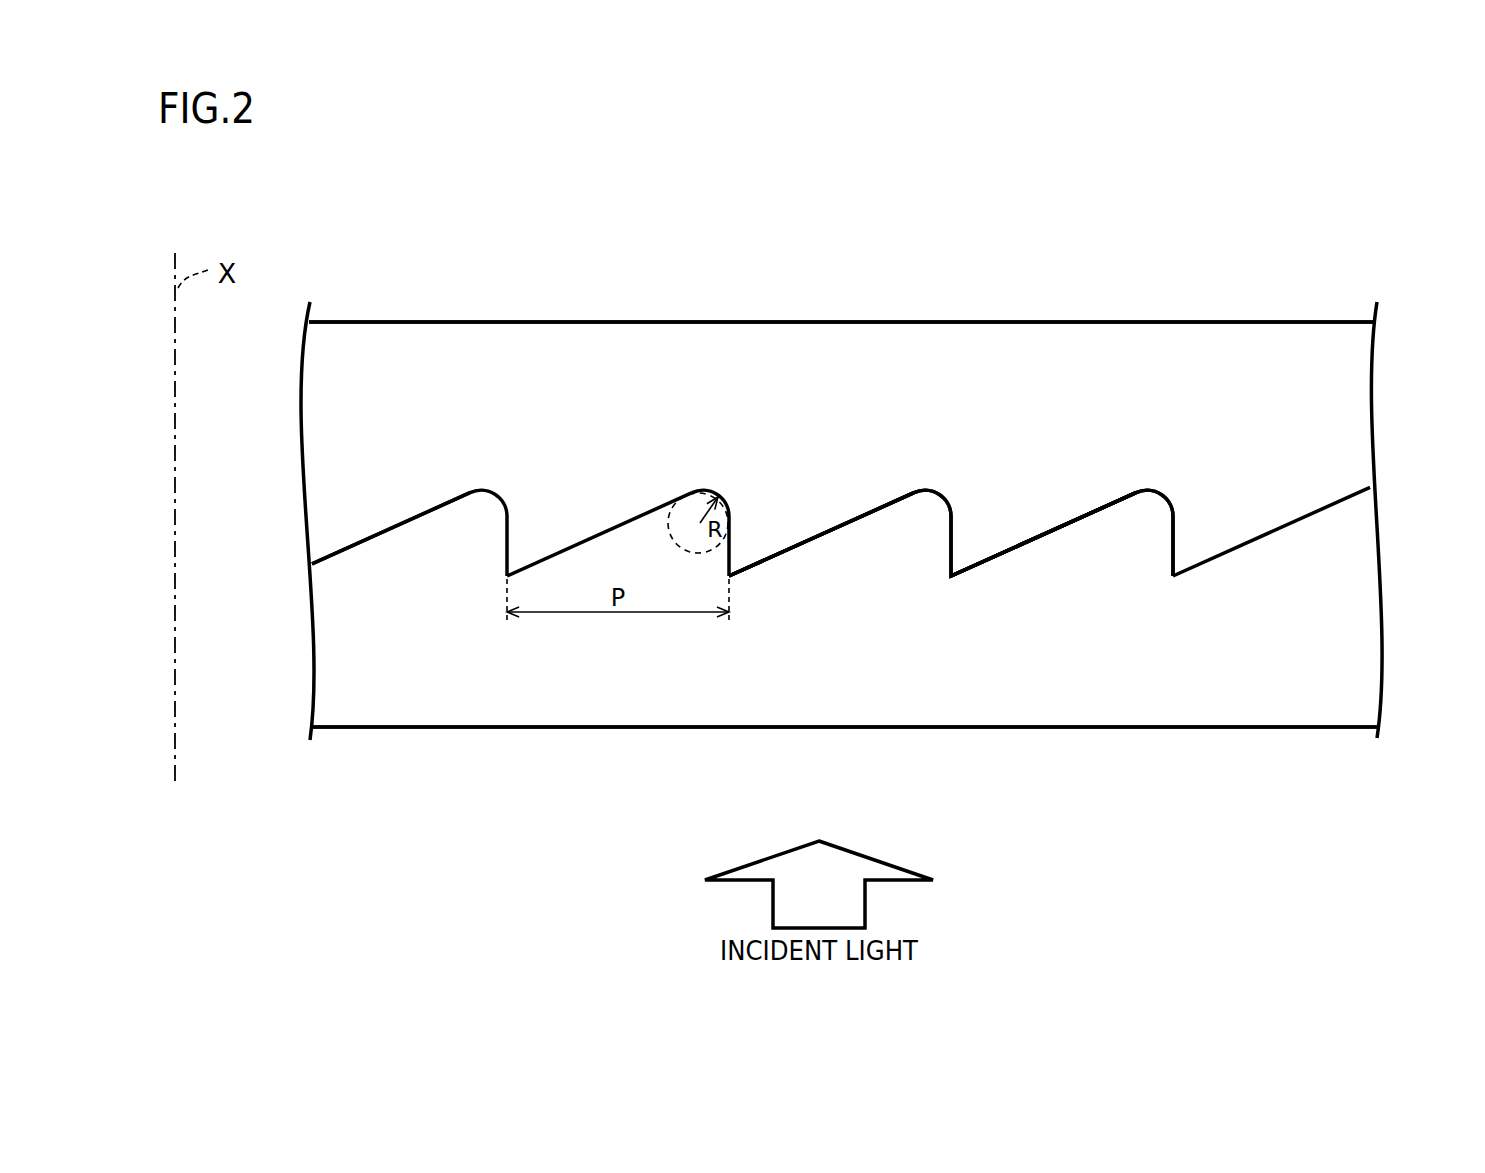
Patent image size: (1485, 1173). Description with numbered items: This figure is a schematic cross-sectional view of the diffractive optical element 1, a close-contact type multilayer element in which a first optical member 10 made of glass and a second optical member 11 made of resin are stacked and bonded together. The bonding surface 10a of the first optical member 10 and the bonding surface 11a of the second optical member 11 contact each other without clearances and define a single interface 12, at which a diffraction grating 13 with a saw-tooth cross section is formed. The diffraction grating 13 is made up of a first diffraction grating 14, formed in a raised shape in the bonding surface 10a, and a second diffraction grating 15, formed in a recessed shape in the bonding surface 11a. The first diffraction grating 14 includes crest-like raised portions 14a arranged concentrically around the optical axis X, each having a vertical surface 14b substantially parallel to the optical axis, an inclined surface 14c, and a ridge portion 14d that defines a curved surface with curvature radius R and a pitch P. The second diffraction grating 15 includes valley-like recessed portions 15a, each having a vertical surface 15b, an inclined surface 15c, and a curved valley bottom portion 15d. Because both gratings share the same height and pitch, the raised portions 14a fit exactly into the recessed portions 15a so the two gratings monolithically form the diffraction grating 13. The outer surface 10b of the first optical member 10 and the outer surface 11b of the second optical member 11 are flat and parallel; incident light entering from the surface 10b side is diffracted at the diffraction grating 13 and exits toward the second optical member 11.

The diffractive optical element 1 is at (1210, 207).
The first optical member 10 is at (1307, 729).
The bonding surface of the first optical member 10a is at (393, 527).
The surface of the first optical member 10b is at (520, 730).
The second optical member 11 is at (1288, 320).
The bonding surface of the second optical member 11a is at (370, 538).
The surface of the second optical member 11b is at (518, 322).
The interface 12 is at (1305, 518).
The diffraction grating 13 is at (1185, 518).
The first diffraction grating 14 is at (878, 268).
The raised portions 14a is at (857, 517).
The vertical surface 14b is at (732, 552).
The inclined surface 14c is at (602, 533).
The ridge portion 14d is at (712, 493).
The second diffraction grating 15 is at (860, 786).
The recessed portions 15a is at (818, 537).
The vertical surface 15b is at (1172, 542).
The inclined surface 15c is at (1055, 529).
The valley bottom portion 15d is at (1160, 495).